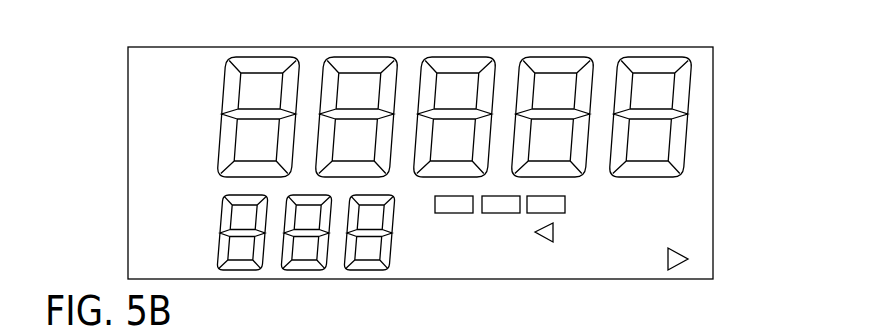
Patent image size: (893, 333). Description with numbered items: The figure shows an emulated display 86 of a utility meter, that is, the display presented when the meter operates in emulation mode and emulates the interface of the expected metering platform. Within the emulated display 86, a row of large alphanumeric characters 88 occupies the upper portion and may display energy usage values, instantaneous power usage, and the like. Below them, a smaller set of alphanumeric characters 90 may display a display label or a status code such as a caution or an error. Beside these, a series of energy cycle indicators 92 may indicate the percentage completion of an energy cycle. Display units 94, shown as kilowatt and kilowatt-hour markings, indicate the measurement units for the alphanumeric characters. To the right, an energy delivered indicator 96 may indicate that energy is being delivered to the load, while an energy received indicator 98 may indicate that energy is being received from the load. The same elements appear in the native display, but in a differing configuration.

The emulated display 86 is at (118, 29).
The alphanumeric characters 88 is at (259, 57).
The alphanumeric characters 90 is at (297, 270).
The energy cycle indicators 92 is at (501, 213).
The display units 94 is at (677, 193).
The energy delivered indicators 96 is at (683, 265).
The energy received indicators 98 is at (537, 233).